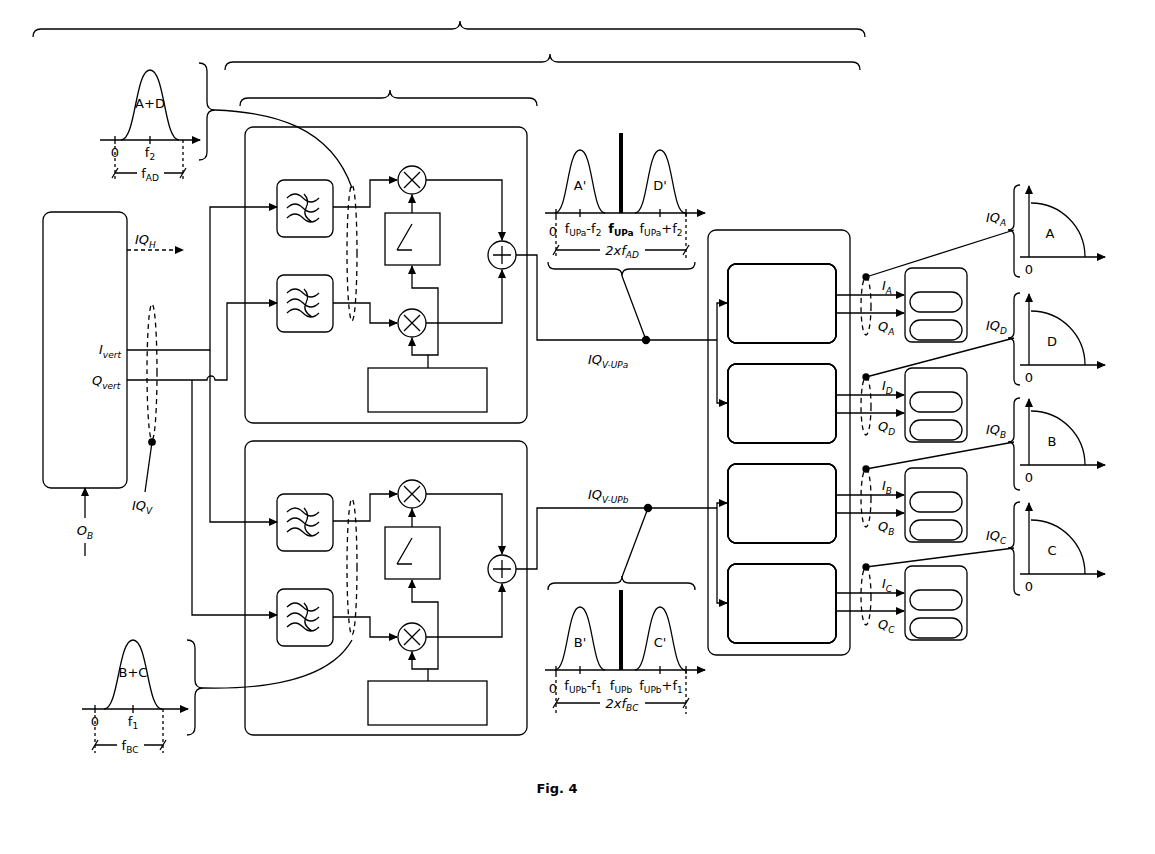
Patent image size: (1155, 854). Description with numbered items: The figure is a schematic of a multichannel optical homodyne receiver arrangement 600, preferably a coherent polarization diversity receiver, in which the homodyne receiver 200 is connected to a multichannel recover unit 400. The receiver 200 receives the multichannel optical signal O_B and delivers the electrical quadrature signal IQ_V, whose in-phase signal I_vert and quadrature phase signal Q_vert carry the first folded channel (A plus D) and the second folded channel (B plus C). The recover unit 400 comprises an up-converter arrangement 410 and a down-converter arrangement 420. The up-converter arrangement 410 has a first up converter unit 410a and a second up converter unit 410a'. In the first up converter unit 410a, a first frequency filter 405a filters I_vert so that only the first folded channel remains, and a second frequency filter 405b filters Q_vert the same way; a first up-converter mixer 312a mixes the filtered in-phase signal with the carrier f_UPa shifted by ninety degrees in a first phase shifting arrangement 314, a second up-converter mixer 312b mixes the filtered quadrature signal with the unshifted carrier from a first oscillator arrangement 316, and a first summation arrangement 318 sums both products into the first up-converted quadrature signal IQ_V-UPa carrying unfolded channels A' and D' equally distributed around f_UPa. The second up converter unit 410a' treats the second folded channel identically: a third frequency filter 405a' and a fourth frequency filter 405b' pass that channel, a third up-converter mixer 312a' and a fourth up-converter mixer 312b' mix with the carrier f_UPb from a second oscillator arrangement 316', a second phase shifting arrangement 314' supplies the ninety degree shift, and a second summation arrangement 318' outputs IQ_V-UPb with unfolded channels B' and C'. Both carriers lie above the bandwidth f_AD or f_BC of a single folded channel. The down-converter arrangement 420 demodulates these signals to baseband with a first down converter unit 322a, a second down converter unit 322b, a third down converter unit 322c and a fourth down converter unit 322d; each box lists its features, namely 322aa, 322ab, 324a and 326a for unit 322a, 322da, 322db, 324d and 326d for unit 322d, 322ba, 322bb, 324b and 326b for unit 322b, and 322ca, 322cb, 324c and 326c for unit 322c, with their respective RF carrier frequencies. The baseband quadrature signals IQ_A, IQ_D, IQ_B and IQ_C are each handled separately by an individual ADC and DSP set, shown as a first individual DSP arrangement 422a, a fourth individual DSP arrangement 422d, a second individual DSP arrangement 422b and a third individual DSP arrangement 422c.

The optical homodyne receiver arrangement 600 is at (449, 20).
The multichannel recover unit 400 is at (542, 53).
The up-converter arrangement 410 is at (388, 89).
The first up converter unit 410a is at (386, 275).
The second up converter unit 410a' is at (386, 588).
The homodyne receiver 200 is at (85, 350).
The first frequency filter 405a is at (292, 195).
The second frequency filter 405b is at (292, 290).
The third frequency filter 405a' is at (292, 509).
The fourth frequency filter 405b' is at (292, 604).
The first up-converter mixer 312a is at (429, 166).
The second up-converter mixer 312b is at (398, 309).
The third up-converter mixer 312a' is at (431, 480).
The fourth up-converter mixer 312b' is at (397, 623).
The first phase shifting arrangement 314 is at (425, 225).
The second phase shifting arrangement 314' is at (426, 539).
The first oscillator arrangement 316 is at (430, 376).
The second oscillator arrangement 316' is at (432, 690).
The first summation arrangement 318 is at (486, 247).
The second summation arrangement 318' is at (486, 561).
The down-converter arrangement 420 is at (779, 442).
The first down converter unit 322a is at (782, 303).
The channel A in-phase mixer 322aa is at (782, 303).
The channel A quadrature mixer 322ab is at (782, 303).
The channel A phase shifter 324a is at (782, 303).
The channel A local oscillator 326a is at (782, 303).
The fourth down converter unit 322d is at (782, 403).
The channel D in-phase mixer 322da is at (782, 403).
The channel D quadrature mixer 322db is at (782, 403).
The channel D phase shifter 324d is at (782, 403).
The channel D local oscillator 326d is at (782, 403).
The second down converter unit 322b is at (782, 503).
The channel B in-phase mixer 322ba is at (782, 503).
The channel B quadrature mixer 322bb is at (782, 503).
The channel B phase shifter 324b is at (782, 503).
The channel B local oscillator 326b is at (782, 503).
The third down converter unit 322c is at (782, 603).
The channel C in-phase mixer 322ca is at (782, 603).
The channel C quadrature mixer 322cb is at (782, 603).
The channel C phase shifter 324c is at (782, 603).
The channel C local oscillator 326c is at (782, 603).
The first individual DSP arrangement 422a is at (936, 305).
The fourth individual DSP arrangement 422d is at (936, 405).
The second individual DSP arrangement 422b is at (936, 505).
The third individual DSP arrangement 422c is at (936, 603).